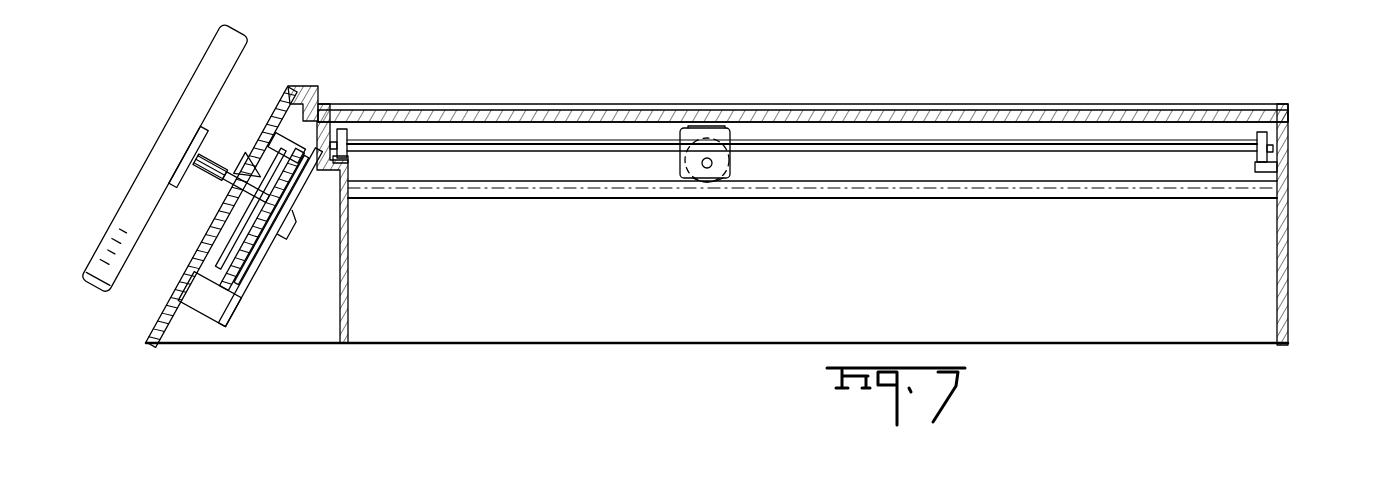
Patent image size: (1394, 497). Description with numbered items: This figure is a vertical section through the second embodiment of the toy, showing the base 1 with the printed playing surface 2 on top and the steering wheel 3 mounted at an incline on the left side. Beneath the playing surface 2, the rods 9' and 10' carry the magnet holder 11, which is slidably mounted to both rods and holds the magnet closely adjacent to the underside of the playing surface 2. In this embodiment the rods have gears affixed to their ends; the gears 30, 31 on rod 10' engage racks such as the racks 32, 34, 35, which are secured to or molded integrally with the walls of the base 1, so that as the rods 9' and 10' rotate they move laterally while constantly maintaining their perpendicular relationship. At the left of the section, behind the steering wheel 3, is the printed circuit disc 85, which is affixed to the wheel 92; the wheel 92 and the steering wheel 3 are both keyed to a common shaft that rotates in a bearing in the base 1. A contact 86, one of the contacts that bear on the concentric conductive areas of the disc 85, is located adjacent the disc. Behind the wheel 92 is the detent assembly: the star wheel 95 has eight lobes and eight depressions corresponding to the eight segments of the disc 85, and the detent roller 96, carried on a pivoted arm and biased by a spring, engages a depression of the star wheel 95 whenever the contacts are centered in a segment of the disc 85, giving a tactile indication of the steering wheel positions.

The base 1 is at (1288, 267).
The printed playing surface 2 is at (1050, 113).
The steering wheel 3 is at (203, 88).
The rod 9' is at (691, 114).
The rod 10' is at (802, 159).
The magnet holder 11 is at (722, 160).
The gear 30 is at (1252, 132).
The gear 31 is at (345, 135).
The rack 32 is at (1083, 185).
The rack 34 is at (1252, 160).
The rack 35 is at (352, 155).
The printed circuit disc 85 is at (290, 195).
The contact 86 is at (233, 317).
The wheel 92 is at (293, 177).
The star wheel 95 is at (227, 263).
The detent roller 96 is at (293, 137).